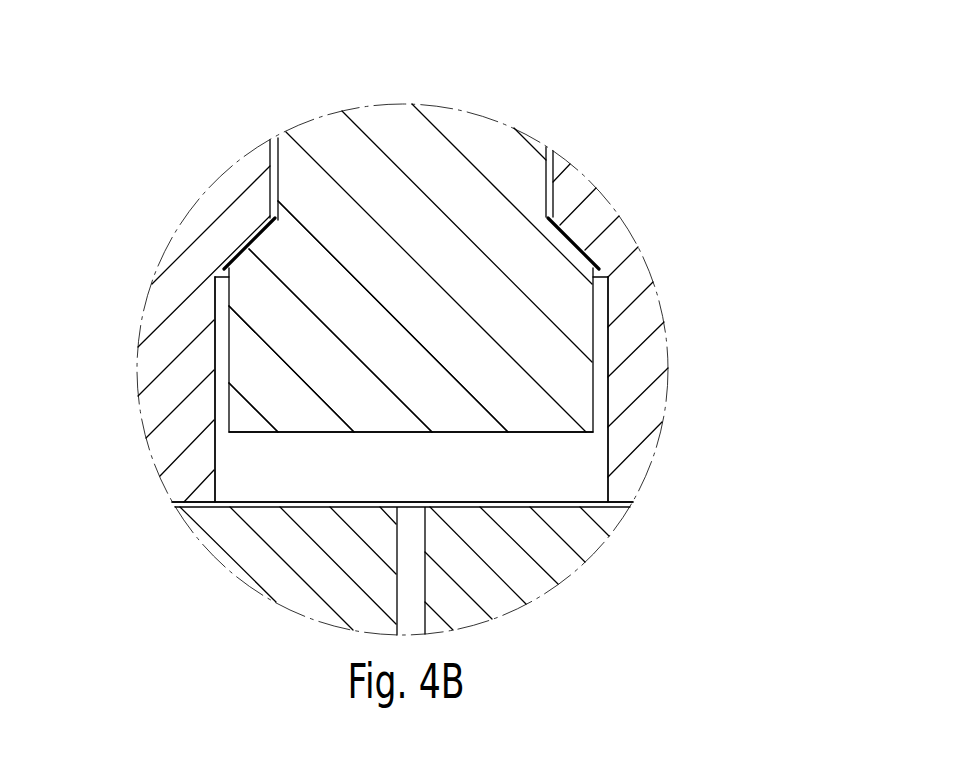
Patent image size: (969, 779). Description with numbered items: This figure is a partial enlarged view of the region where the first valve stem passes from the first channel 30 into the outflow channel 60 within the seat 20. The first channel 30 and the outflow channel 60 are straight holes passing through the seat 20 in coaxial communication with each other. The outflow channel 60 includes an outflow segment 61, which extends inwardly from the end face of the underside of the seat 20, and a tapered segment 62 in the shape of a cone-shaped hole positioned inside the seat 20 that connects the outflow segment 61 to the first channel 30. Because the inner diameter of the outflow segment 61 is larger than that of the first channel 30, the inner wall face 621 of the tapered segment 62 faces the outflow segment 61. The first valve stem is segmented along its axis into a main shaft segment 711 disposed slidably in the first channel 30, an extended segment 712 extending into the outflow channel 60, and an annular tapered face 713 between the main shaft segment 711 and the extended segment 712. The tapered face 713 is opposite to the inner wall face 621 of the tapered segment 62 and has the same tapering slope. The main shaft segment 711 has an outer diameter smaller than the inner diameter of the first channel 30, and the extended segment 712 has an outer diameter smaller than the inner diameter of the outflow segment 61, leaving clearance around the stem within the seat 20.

The main shaft segment 711 is at (353, 176).
The extended segment 712 is at (555, 370).
The annular tapered face 713 is at (585, 258).
The first channel 30 is at (553, 197).
The inner wall face 621 is at (240, 227).
The seat 20 is at (185, 328).
The tapered segment 62 is at (578, 229).
The outflow segment 61 is at (566, 465).
The outflow channel 60 is at (497, 469).